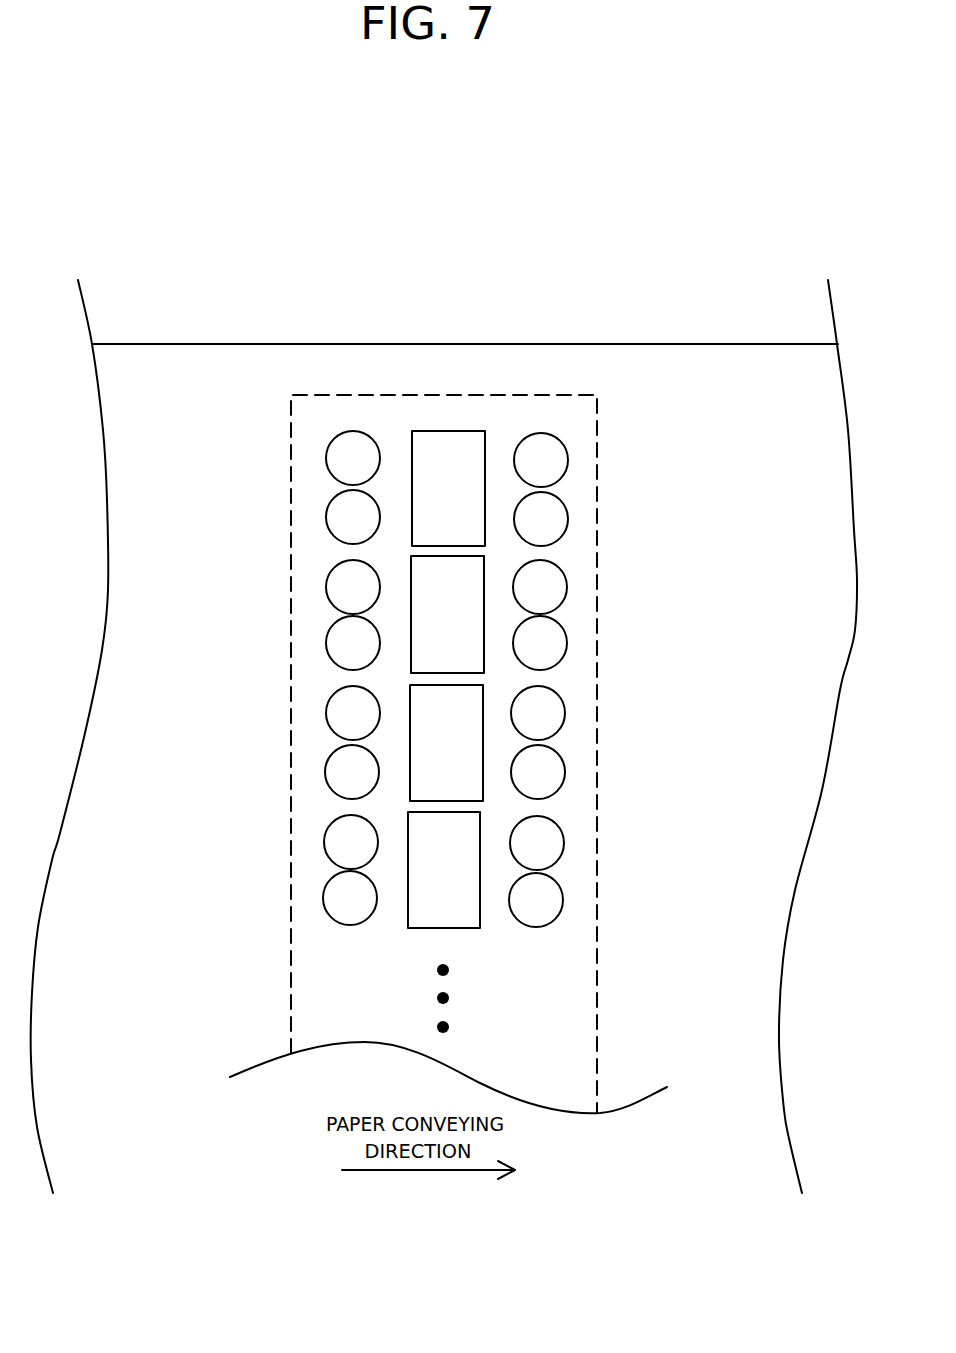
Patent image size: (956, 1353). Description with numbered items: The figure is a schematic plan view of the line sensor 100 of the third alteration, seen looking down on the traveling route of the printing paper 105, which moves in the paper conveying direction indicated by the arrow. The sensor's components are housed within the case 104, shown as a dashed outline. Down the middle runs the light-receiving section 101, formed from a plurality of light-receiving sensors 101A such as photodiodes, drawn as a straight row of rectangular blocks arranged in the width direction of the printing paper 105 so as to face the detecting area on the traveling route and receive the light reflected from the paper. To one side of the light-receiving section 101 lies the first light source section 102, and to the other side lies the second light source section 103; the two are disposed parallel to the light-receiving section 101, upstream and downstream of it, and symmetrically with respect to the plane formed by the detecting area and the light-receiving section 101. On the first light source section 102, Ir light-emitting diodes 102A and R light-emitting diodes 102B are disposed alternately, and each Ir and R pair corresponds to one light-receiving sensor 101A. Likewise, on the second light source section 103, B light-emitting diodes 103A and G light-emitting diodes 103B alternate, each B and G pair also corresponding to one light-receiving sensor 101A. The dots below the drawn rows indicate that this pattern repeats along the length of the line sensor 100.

The sensor unit 100 is at (423, 666).
The light receiving elements 101 is at (484, 605).
The light receiving element 101A is at (463, 448).
The first light emitting element group 102 is at (293, 658).
The infrared light emitting element 102A is at (327, 463).
The red light emitting element 102B is at (327, 533).
The second light emitting element group 103 is at (598, 658).
The blue light emitting element 103A is at (568, 465).
The green light emitting element 103B is at (568, 533).
The sensor region 104 is at (337, 395).
The paper edge 105 is at (690, 353).